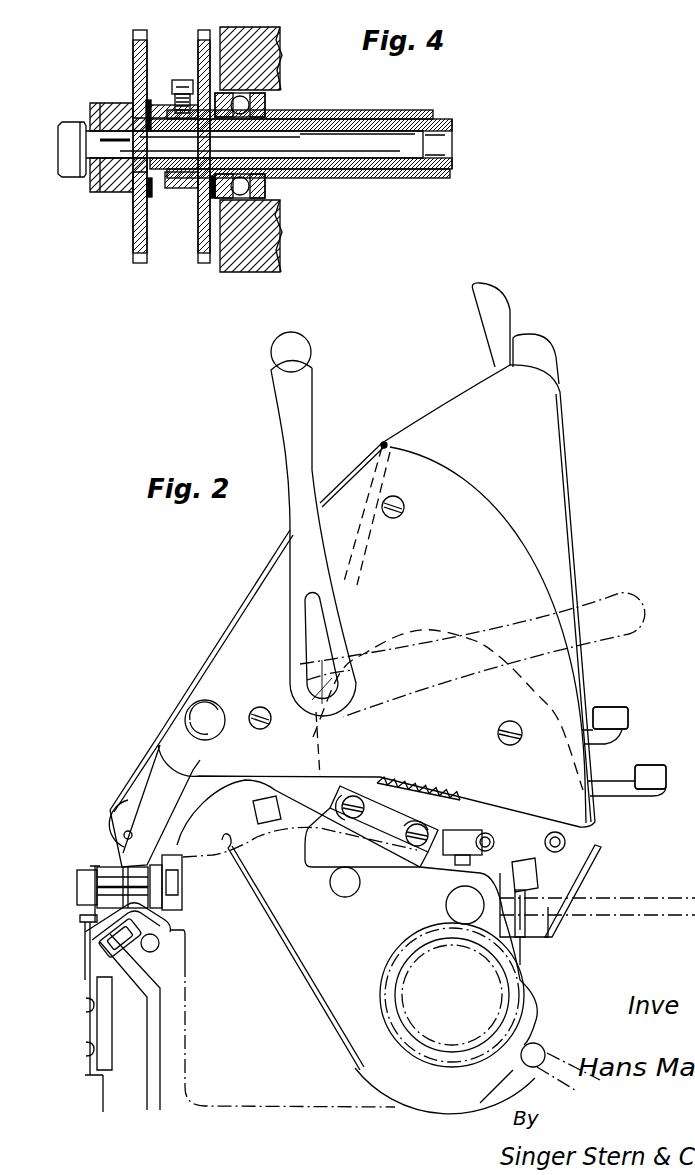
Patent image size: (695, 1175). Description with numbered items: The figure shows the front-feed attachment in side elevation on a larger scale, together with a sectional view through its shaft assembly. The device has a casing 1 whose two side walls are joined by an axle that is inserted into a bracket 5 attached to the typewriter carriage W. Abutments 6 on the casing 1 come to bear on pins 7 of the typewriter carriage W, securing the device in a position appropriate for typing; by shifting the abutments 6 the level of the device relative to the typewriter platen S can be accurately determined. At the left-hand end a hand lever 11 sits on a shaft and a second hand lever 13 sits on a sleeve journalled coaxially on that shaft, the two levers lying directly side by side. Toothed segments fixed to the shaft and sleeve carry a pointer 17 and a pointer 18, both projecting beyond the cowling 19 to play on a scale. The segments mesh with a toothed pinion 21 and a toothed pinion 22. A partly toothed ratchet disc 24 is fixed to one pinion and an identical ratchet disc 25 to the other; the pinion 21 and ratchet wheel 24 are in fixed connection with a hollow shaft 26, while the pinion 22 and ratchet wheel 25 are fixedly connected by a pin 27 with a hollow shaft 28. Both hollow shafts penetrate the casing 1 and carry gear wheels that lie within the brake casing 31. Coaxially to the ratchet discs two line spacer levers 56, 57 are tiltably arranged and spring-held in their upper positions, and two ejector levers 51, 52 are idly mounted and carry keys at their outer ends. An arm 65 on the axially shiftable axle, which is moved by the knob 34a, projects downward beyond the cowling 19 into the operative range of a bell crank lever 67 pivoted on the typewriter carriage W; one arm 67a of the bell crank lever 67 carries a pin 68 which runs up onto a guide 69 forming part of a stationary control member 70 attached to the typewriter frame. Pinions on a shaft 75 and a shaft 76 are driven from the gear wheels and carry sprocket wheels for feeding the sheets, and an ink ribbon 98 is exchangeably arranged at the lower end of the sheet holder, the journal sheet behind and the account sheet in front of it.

In FIG. 2, the casing 1 is at (548, 458).
In FIG. 2, the bracket 5 is at (173, 851).
In FIG. 2, the abutments 6 is at (395, 858).
In FIG. 2, the pins 7 is at (343, 897).
In FIG. 2, the hand lever 11 is at (308, 398).
In FIG. 2, the hand lever 13 is at (311, 351).
In FIG. 2, the pointer 17 is at (391, 445).
In FIG. 2, the pointer 18 is at (391, 445).
In FIG. 2, the cowling 19 is at (555, 549).
In FIG. 4, the toothed pinion 21 is at (156, 191).
In FIG. 4, the toothed pinion 22 is at (100, 194).
In FIG. 4, the ratchet disc 24 is at (205, 263).
In FIG. 2, the ratchet disc 24 is at (400, 782).
In FIG. 4, the ratchet disc 25 is at (142, 263).
In FIG. 2, the ratchet disc 25 is at (400, 782).
In FIG. 4, the hollow shaft 26 is at (398, 178).
In FIG. 4, the pin 27 is at (346, 150).
In FIG. 4, the hollow shaft 28 is at (451, 124).
In FIG. 2, the brake casing 31 is at (440, 633).
In FIG. 2, the knob 34a is at (203, 716).
In FIG. 2, the ejector lever 51 is at (647, 770).
In FIG. 2, the ejector lever 52 is at (647, 770).
In FIG. 4, the line spacer lever 56 is at (208, 188).
In FIG. 2, the line spacer lever 56 is at (618, 710).
In FIG. 4, the line spacer lever 57 is at (148, 101).
In FIG. 2, the line spacer lever 57 is at (618, 710).
In FIG. 2, the arm 65 is at (172, 780).
In FIG. 2, the bell crank lever 67 is at (125, 868).
In FIG. 2, the arm of the bell crank lever 67a is at (95, 900).
In FIG. 2, the pin 68 is at (82, 919).
In FIG. 2, the guide 69 is at (90, 933).
In FIG. 2, the stationary control member 70 is at (90, 952).
In FIG. 2, the shaft 75 is at (566, 843).
In FIG. 2, the shaft 76 is at (487, 834).
In FIG. 2, the ink ribbon 98 is at (522, 950).
In FIG. 2, the typewriter platen S is at (417, 1008).
In FIG. 2, the typewriter carriage W is at (190, 1088).